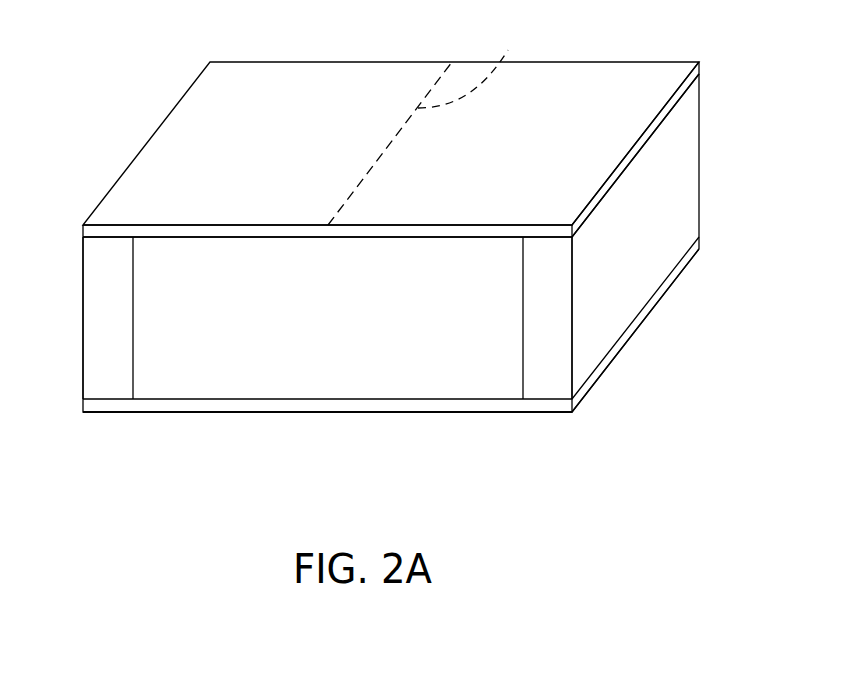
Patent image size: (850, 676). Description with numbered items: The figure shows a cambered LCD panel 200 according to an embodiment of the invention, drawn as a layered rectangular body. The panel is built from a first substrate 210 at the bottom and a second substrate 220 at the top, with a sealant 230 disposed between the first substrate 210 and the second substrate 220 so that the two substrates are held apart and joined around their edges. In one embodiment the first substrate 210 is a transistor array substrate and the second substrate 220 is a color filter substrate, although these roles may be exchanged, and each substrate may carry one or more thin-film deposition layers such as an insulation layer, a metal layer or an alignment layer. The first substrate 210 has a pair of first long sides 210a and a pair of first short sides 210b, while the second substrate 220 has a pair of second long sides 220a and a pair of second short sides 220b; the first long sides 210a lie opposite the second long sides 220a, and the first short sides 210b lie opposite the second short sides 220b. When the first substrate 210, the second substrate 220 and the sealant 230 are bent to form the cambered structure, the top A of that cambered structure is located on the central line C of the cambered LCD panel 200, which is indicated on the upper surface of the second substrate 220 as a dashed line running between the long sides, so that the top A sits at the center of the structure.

The cambered LCD panel 200 is at (681, 479).
The second substrate 220 is at (560, 232).
The second long sides 220a is at (267, 237).
The second short sides 220b is at (650, 140).
The first substrate 210 is at (563, 404).
The first long sides 210a is at (328, 412).
The first short sides 210b is at (673, 283).
The sealant 230 is at (551, 328).
The top of the cambered structure A is at (453, 62).
The central line C is at (466, 62).